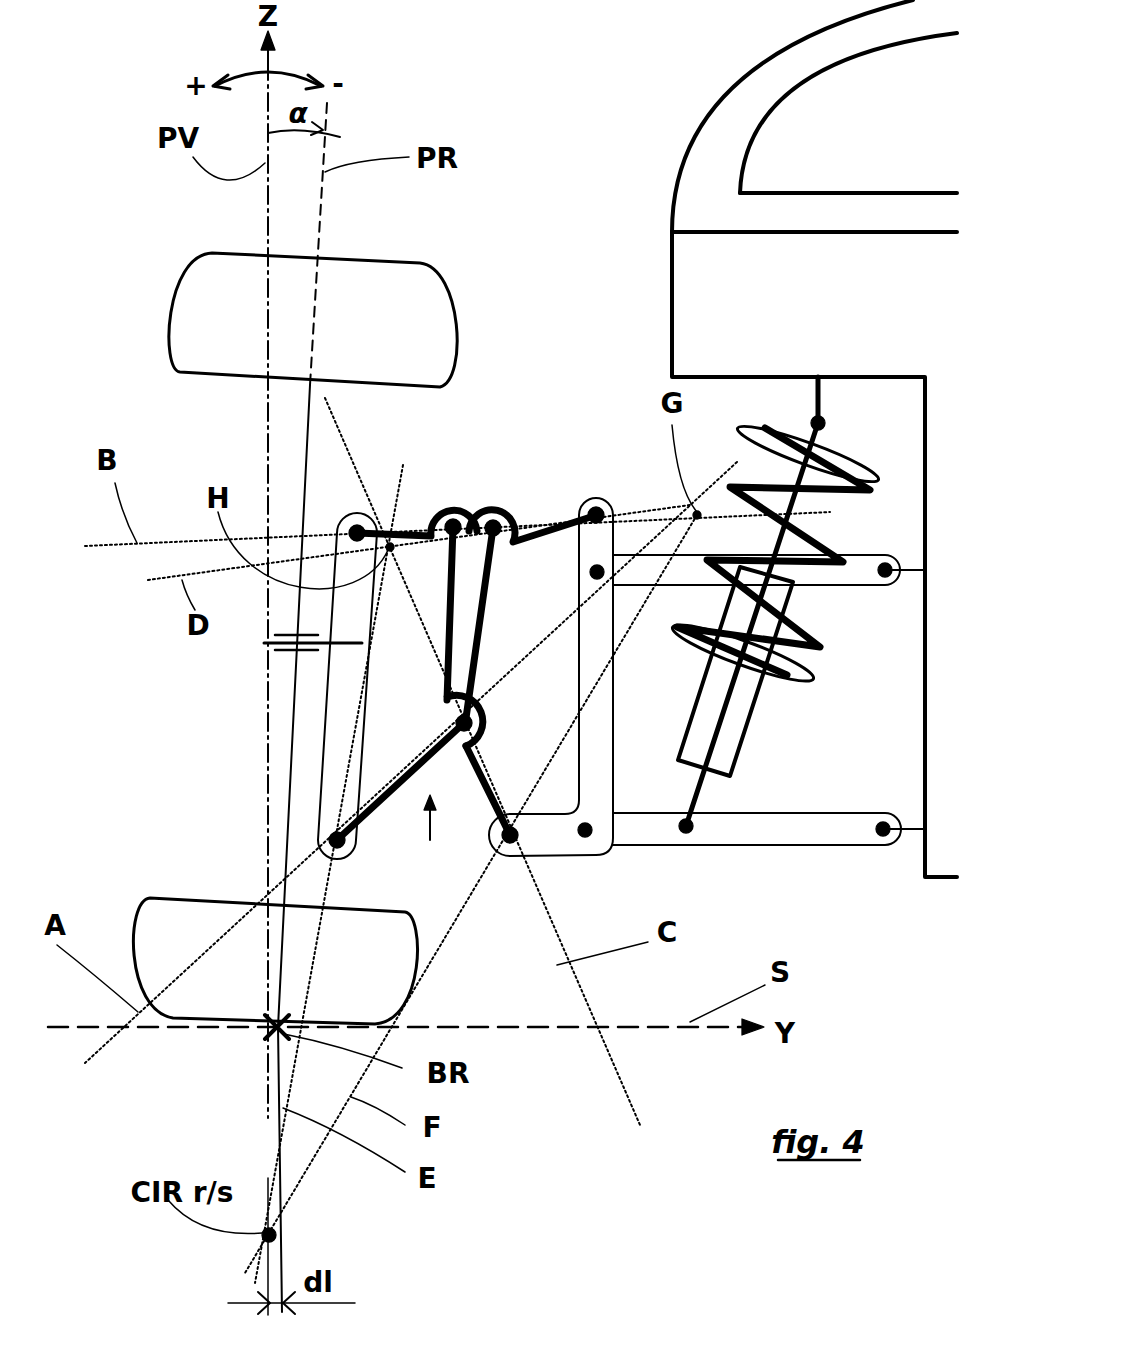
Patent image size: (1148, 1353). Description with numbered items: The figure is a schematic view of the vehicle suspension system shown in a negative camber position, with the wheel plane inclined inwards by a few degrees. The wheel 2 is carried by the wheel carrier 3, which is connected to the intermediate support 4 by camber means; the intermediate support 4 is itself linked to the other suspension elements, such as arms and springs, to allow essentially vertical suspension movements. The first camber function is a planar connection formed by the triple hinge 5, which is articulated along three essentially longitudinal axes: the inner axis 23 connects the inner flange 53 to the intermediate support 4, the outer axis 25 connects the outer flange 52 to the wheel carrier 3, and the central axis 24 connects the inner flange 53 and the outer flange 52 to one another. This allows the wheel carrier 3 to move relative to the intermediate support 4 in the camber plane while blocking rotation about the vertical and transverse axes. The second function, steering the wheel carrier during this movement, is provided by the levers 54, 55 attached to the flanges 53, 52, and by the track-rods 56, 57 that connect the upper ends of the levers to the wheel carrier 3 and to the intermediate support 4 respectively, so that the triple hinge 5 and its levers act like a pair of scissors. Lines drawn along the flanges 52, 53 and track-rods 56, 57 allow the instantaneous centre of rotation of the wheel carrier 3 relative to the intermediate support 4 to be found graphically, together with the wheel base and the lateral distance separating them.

The wheel 2 is at (290, 802).
The wheel carrier 3 is at (333, 718).
The intermediate support 4 is at (600, 770).
The triple hinge 5 is at (429, 837).
The inner axis 23 is at (517, 834).
The central axis 24 is at (490, 727).
The outer axis 25 is at (318, 836).
The outer flange 52 is at (402, 778).
The inner flange 53 is at (482, 787).
The lever 54 is at (450, 593).
The lever 55 is at (487, 622).
The track-rod 56 is at (408, 527).
The inner track-rod 57 is at (545, 521).